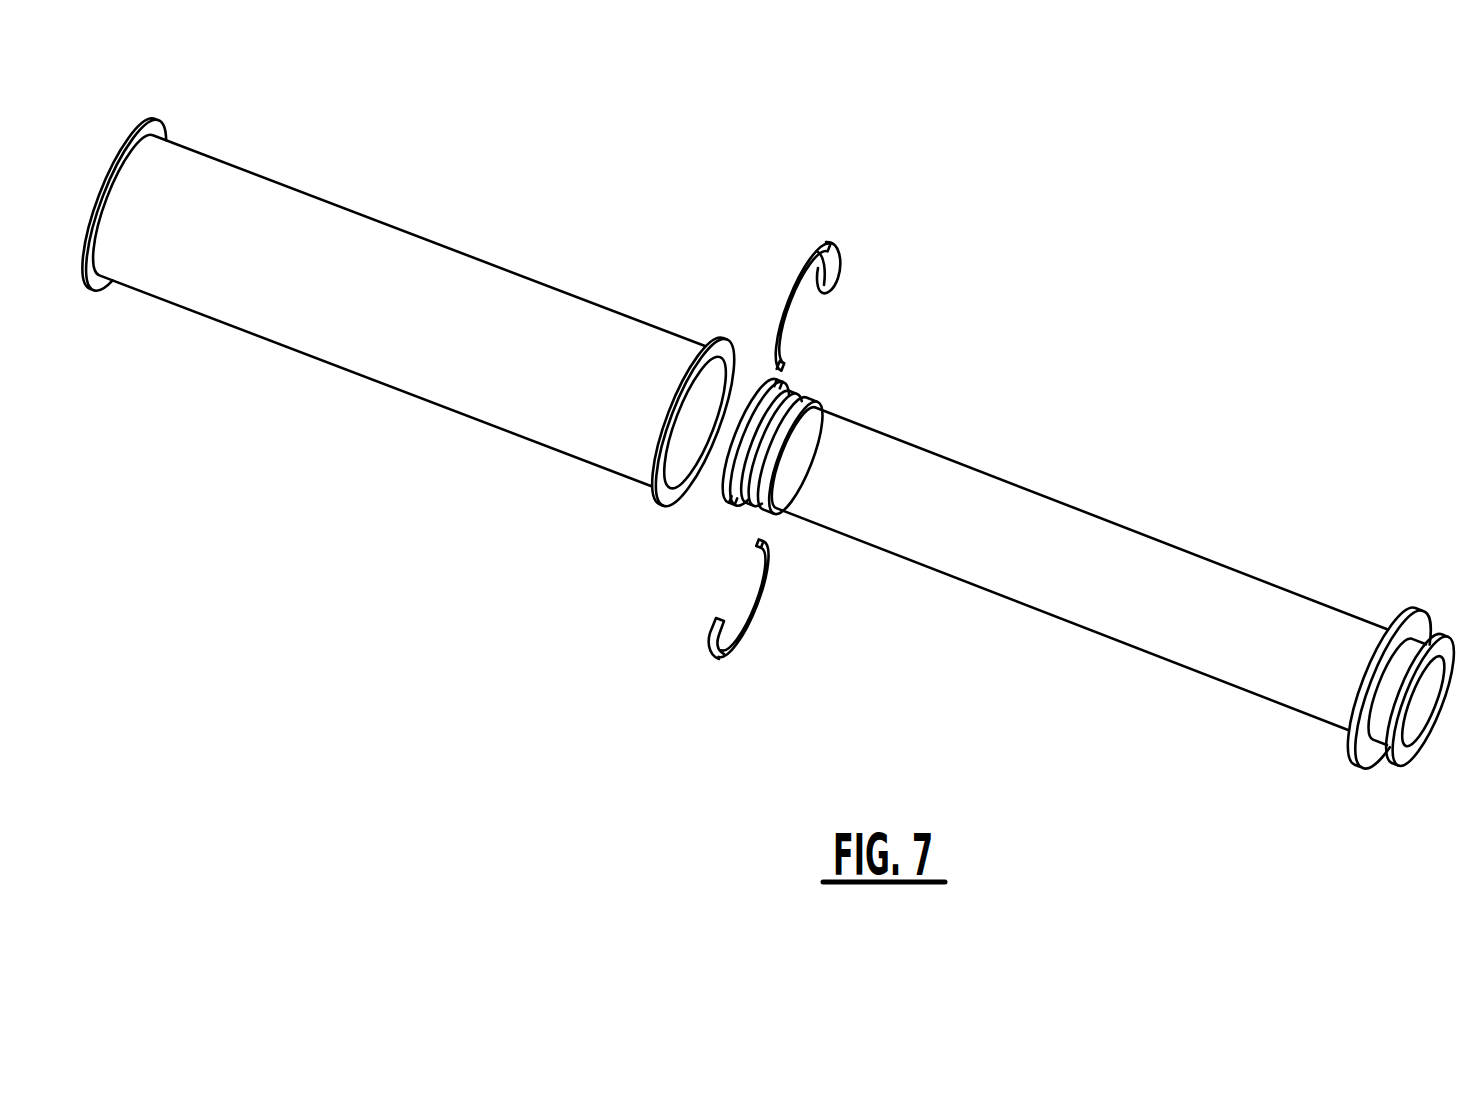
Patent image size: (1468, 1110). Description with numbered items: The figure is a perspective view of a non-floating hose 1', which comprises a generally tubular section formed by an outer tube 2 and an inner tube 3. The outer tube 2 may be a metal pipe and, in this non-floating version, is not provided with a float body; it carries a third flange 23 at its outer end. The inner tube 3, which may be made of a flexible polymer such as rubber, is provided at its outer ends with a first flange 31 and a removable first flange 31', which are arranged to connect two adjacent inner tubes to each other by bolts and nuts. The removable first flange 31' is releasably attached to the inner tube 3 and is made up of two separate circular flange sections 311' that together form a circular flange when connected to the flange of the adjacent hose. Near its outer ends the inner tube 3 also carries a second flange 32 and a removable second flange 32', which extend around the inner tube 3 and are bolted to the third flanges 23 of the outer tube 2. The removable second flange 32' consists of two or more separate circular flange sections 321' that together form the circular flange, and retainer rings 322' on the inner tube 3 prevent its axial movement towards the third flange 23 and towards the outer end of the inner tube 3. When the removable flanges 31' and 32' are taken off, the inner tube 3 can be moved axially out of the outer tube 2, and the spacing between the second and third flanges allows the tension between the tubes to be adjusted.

The non-floating hose 1' is at (1082, 416).
The outer tube 2 is at (452, 267).
The inner tube 3 is at (1146, 557).
The third flange 23 is at (157, 128).
The first flange 31 is at (1420, 722).
The second flange 32 is at (1386, 652).
The removable first flange 31' is at (820, 375).
The flange section 311' is at (746, 442).
The removable second flange 32' is at (809, 393).
The flange section 321' is at (773, 393).
The retainer ring 322' is at (855, 449).